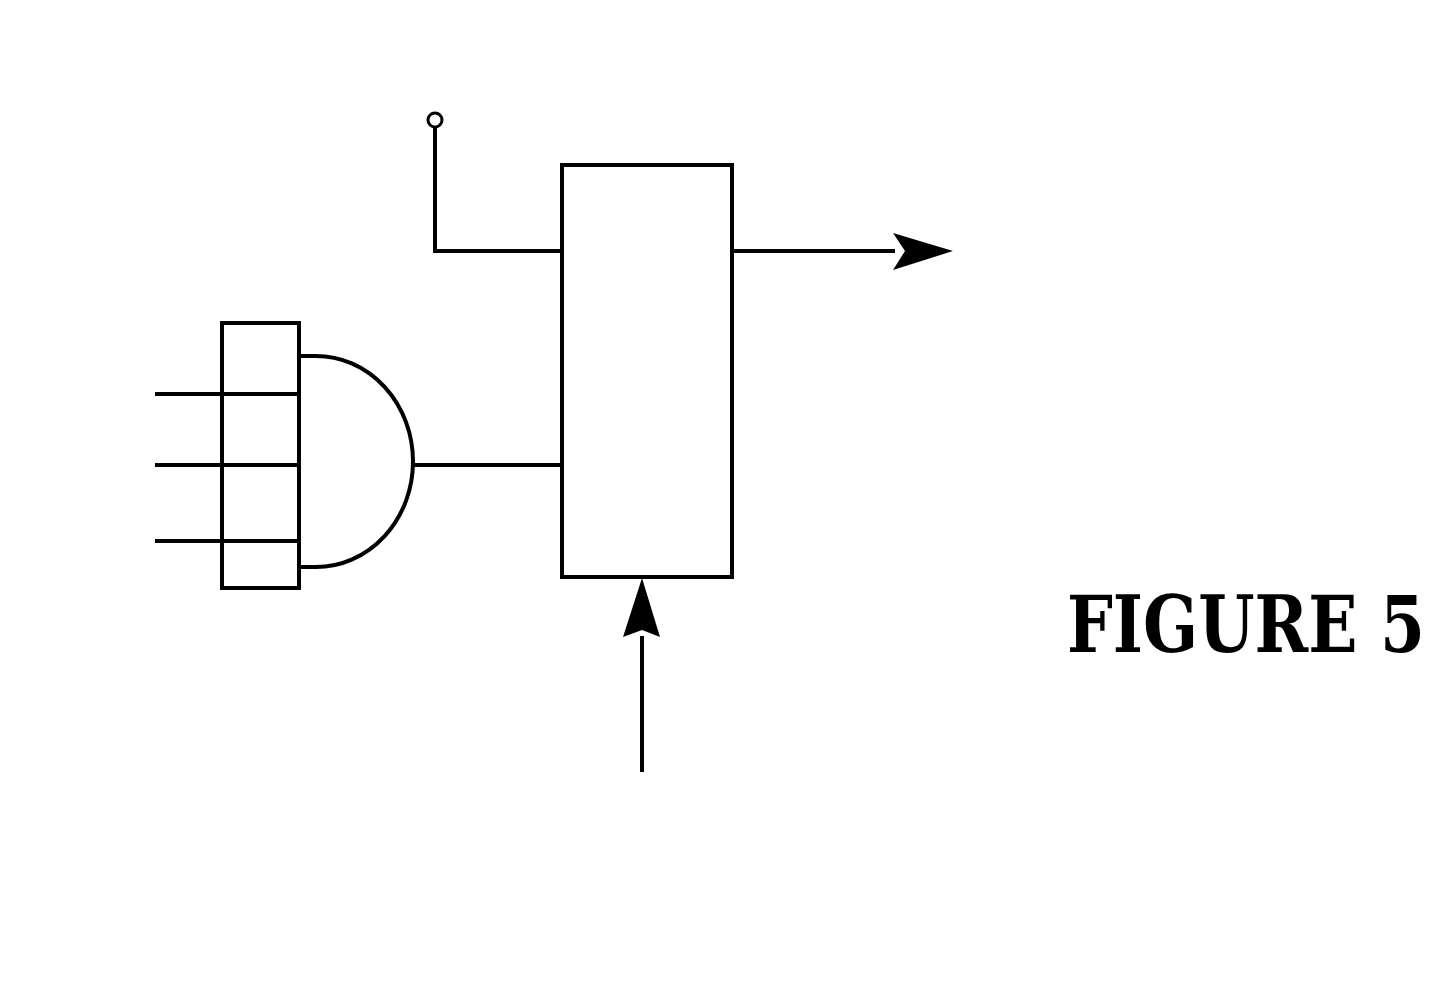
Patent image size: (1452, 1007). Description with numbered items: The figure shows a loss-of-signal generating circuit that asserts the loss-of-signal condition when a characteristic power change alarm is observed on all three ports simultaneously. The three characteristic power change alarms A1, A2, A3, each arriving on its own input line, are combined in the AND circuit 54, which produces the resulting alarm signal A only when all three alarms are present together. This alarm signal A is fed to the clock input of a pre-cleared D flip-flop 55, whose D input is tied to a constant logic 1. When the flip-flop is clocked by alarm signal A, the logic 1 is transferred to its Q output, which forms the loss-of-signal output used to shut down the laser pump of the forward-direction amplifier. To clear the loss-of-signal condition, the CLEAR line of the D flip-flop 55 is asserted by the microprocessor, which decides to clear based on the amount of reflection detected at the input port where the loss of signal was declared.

The AND circuit 54 is at (357, 546).
The D flip-flop 55 is at (746, 438).
The logic 1 is at (482, 145).
The characteristic power change alarm A1 is at (187, 357).
The characteristic power change alarm A2 is at (187, 433).
The characteristic power change alarm A3 is at (187, 508).